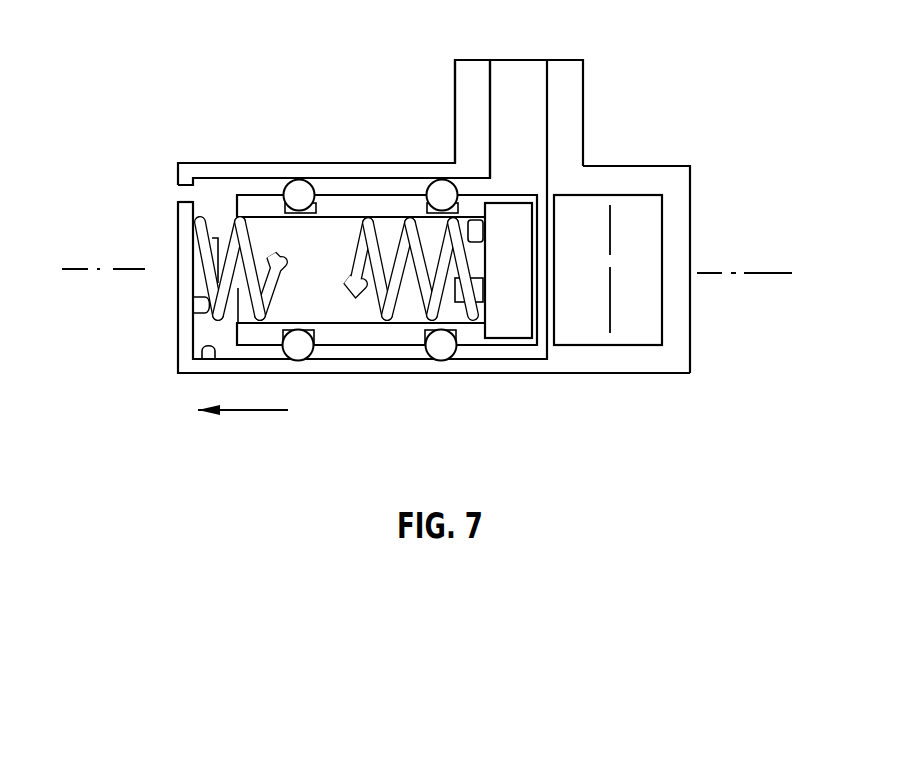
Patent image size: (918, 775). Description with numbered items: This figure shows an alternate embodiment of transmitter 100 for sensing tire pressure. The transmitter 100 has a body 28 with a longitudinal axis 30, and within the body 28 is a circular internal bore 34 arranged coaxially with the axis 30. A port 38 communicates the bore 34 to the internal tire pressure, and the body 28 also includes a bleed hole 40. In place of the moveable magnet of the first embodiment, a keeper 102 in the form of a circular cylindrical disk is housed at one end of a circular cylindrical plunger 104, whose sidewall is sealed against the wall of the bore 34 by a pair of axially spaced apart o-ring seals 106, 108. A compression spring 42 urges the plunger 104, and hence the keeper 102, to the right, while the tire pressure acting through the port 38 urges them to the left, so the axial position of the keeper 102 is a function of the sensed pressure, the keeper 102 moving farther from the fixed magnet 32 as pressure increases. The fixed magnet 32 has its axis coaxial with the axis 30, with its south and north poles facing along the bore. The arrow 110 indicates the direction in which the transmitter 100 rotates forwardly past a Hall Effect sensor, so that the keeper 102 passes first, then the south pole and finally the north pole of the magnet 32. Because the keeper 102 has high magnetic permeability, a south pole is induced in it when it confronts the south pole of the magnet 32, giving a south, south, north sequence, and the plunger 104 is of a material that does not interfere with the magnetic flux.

The body 28 is at (595, 182).
The longitudinal axis 30 is at (718, 274).
The fixed magnet 32 is at (642, 220).
The circular internal bore 34 is at (207, 350).
The port 38 is at (530, 60).
The bleed hole 40 is at (178, 188).
The compression spring 42 is at (202, 267).
The transmitter 100 is at (687, 377).
The keeper 102 is at (493, 320).
The plunger 104 is at (346, 334).
The o-ring seal 106 is at (299, 180).
The o-ring seal 108 is at (437, 180).
The arrow 110 is at (243, 412).